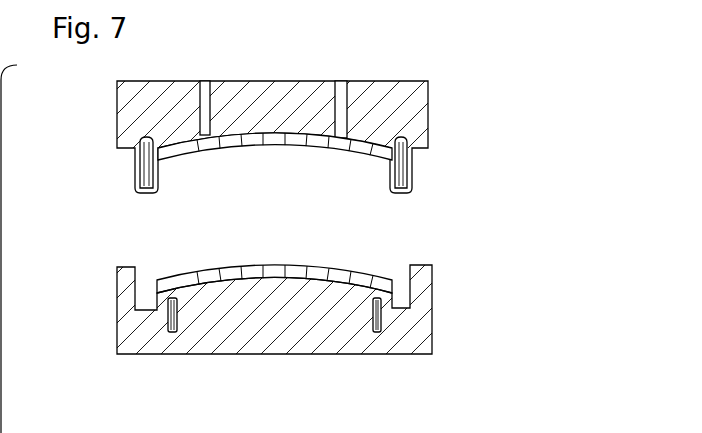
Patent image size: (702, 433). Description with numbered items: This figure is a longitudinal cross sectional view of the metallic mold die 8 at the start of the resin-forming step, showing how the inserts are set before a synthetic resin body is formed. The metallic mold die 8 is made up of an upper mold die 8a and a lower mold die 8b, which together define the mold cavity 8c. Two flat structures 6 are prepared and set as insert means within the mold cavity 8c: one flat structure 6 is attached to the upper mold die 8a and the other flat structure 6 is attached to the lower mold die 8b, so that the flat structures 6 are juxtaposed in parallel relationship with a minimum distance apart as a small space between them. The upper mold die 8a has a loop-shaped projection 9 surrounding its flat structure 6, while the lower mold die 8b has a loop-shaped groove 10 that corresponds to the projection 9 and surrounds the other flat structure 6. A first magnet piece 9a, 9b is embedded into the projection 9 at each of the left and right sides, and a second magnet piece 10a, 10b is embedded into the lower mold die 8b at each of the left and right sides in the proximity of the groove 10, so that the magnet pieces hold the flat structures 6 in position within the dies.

The flat structure 6 is at (330, 150).
The metallic mold die 8 is at (453, 229).
The upper mold die 8a is at (308, 96).
The lower mold die 8b is at (432, 333).
The mold cavity 8c is at (298, 134).
The loop-shaped projection 9 is at (277, 195).
The first magnet piece 9a is at (135, 163).
The first magnet piece 9b is at (412, 165).
The loop-shaped groove 10 is at (282, 331).
The second magnet piece 10a is at (170, 333).
The second magnet piece 10b is at (378, 333).